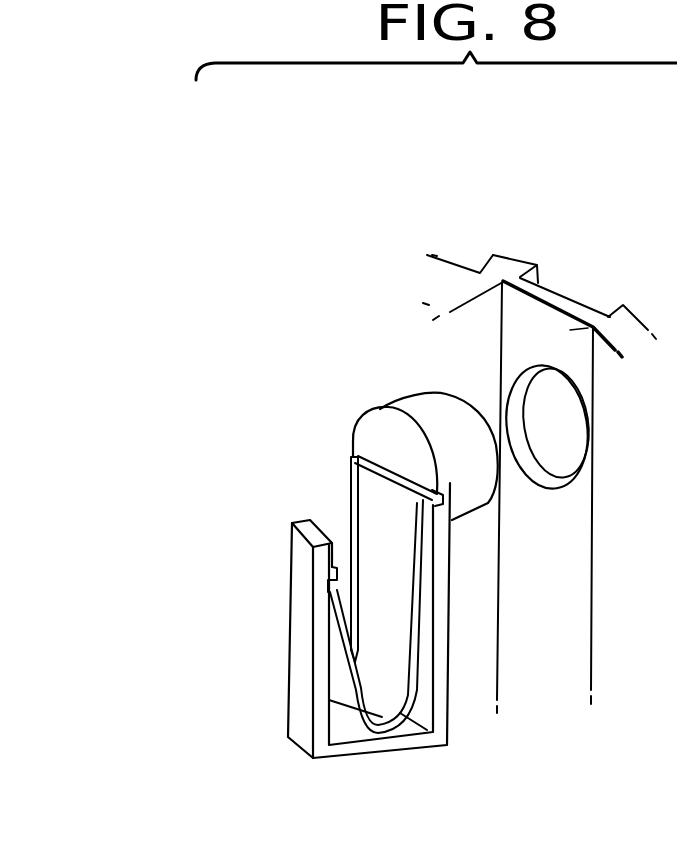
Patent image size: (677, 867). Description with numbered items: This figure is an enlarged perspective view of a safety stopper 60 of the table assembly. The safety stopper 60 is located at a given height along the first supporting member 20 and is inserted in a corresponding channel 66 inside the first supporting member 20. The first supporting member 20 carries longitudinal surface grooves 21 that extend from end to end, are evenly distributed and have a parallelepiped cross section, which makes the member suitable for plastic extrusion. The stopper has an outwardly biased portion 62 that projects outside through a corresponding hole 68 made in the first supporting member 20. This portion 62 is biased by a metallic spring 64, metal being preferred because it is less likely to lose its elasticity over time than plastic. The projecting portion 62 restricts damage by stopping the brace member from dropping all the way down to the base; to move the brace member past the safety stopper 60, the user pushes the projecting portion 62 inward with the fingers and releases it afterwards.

The first supporting member 20 is at (517, 259).
The longitudinal surface groove 21 is at (613, 310).
The channel 66 is at (466, 291).
The outwardly biased portion 62 is at (433, 409).
The hole 68 is at (540, 470).
The metallic spring 64 is at (372, 506).
The safety stopper 60 is at (448, 728).